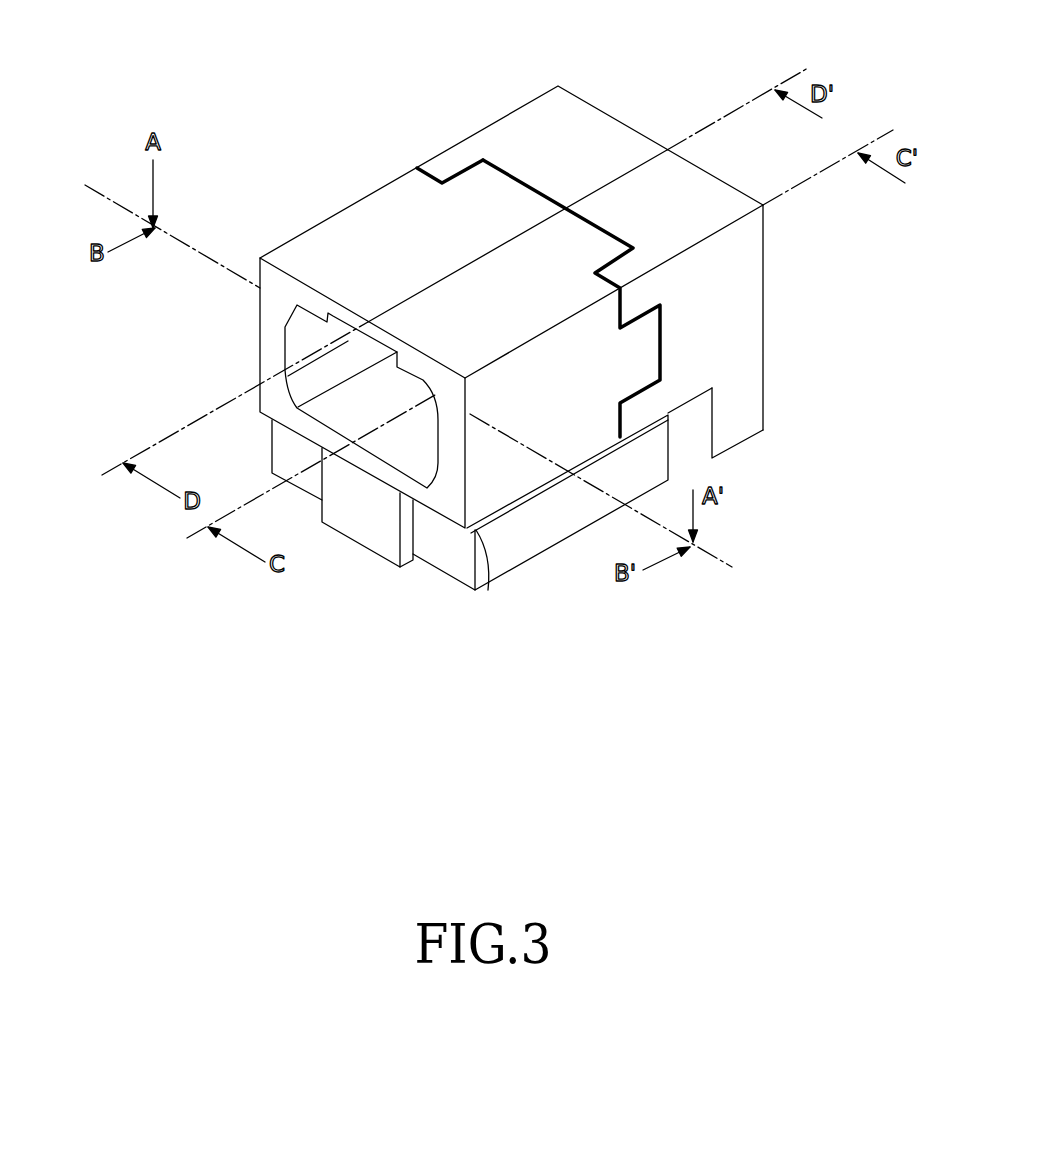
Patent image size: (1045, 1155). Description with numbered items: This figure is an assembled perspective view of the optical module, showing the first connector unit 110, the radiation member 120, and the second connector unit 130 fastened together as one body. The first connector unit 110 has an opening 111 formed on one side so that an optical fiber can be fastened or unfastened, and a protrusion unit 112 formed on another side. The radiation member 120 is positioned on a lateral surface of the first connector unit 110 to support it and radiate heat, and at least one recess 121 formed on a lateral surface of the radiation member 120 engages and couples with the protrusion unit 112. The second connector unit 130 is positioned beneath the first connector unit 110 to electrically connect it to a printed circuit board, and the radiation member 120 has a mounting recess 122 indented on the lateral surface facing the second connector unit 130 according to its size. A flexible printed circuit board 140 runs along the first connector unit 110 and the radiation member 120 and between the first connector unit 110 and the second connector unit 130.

The first connector unit 110 is at (366, 224).
The opening 111 is at (285, 348).
The protrusion unit 112 is at (510, 178).
The radiation member 120 is at (740, 258).
The recess 121 is at (560, 203).
The mounting recess 122 is at (693, 423).
The second connector unit 130 is at (522, 545).
The flexible printed circuit board 140 is at (488, 590).